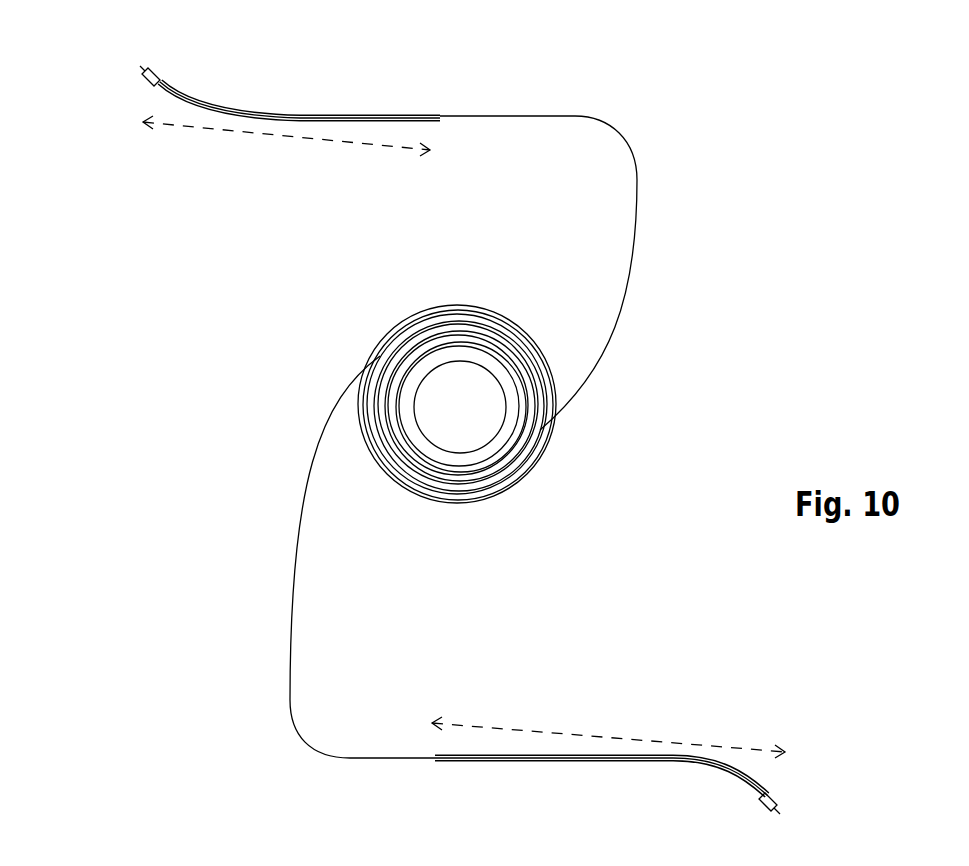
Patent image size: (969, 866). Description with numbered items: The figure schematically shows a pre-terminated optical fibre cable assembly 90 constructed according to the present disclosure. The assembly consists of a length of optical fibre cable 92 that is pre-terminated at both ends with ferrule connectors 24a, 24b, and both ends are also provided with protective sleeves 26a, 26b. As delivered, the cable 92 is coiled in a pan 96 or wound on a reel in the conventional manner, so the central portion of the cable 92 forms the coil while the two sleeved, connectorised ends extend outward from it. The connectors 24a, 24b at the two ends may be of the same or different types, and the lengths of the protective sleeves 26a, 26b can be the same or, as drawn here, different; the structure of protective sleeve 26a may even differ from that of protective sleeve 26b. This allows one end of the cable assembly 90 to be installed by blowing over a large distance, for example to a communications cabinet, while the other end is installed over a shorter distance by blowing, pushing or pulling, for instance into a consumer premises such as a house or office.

The pre-terminated optical fibre cable assembly 90 is at (585, 480).
The optical fibre cable 92 is at (630, 276).
The pan 96 is at (477, 502).
The protective sleeve 26a is at (527, 765).
The protective sleeve 26b is at (305, 112).
The ferrule connector 24a is at (783, 808).
The ferrule connector 24b is at (145, 66).